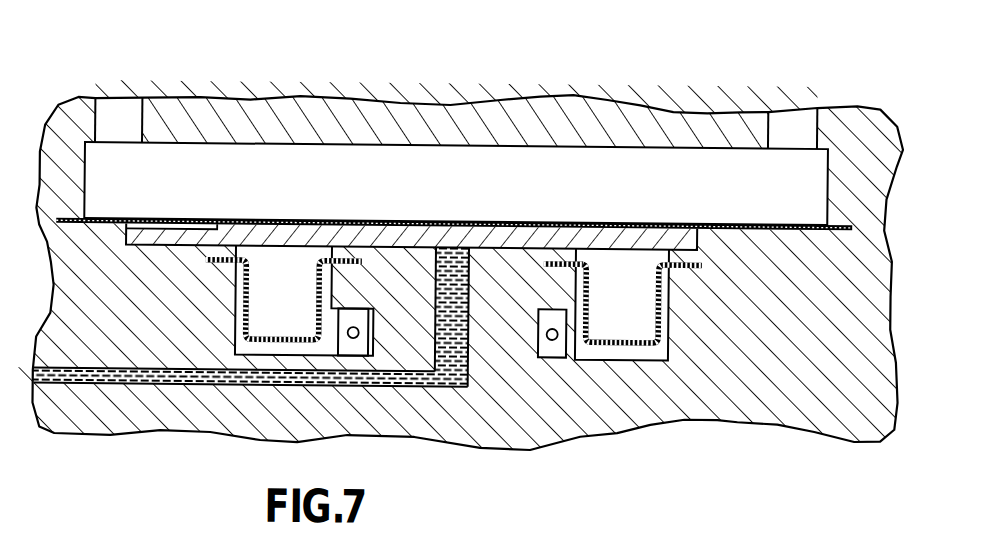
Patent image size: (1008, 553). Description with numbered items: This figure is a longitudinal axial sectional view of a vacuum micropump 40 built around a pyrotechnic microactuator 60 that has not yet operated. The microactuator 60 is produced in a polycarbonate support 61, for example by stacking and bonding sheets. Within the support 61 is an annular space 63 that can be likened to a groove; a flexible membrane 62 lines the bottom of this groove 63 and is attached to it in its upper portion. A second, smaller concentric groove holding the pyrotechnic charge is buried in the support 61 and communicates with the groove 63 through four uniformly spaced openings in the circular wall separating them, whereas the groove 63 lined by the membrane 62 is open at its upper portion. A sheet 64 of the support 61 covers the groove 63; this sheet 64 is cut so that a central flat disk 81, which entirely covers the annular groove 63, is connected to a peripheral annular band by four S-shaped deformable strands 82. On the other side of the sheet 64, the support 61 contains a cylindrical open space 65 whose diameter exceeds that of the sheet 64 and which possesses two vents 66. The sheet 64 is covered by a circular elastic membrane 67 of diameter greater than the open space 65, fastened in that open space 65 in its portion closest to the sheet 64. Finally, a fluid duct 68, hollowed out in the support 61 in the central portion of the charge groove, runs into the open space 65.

The vacuum micropump 40 is at (870, 92).
The microactuator 60 is at (643, 314).
The polycarbonate support 61 is at (530, 306).
The flexible membrane 62 is at (647, 342).
The annular space 63 is at (607, 308).
The sheet 64 is at (634, 223).
The cylindrical open space 65 is at (328, 171).
The vents 66 is at (768, 121).
The elastic membrane 67 is at (310, 218).
The fluid duct 68 is at (457, 327).
The central flat disk 81 is at (402, 237).
The S-shaped deformable strands 82 is at (173, 236).